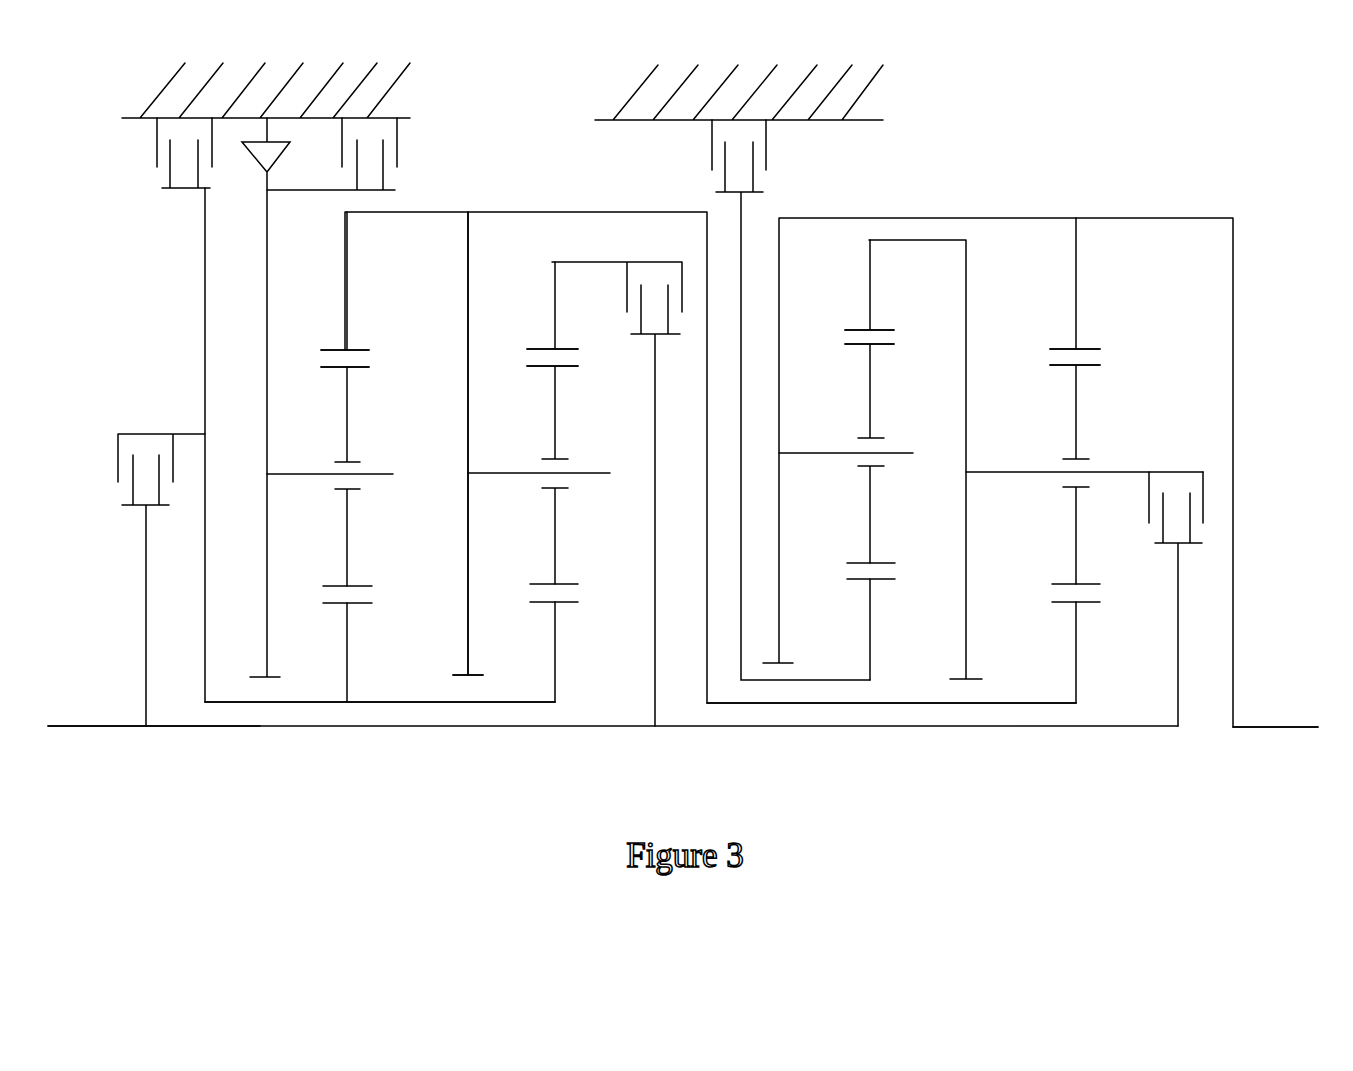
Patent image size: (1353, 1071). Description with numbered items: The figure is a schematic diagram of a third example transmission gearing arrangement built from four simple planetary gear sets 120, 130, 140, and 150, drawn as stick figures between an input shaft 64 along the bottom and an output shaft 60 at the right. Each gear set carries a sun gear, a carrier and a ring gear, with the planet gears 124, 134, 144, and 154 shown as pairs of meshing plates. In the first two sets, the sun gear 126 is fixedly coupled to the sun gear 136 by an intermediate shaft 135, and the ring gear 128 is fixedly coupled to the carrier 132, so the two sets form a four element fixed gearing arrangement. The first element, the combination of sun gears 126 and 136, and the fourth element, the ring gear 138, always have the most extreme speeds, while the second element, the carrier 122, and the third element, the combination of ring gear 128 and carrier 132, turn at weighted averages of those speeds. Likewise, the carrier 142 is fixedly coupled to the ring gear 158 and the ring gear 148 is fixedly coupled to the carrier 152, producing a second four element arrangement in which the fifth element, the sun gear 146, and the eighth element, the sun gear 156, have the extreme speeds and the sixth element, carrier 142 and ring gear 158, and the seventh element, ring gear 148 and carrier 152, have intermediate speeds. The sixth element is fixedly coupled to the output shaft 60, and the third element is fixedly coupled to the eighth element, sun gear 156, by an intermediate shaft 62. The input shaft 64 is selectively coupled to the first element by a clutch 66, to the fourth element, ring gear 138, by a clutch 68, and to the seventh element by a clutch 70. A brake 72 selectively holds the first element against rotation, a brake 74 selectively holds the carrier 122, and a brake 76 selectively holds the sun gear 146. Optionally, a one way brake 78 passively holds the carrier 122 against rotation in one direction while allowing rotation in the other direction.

The output shaft 60 is at (1290, 727).
The intermediate shaft 62 is at (918, 703).
The input shaft 64 is at (258, 727).
The clutch 66 is at (155, 434).
The clutch 68 is at (682, 262).
The clutch 70 is at (1190, 472).
The brake 72 is at (157, 140).
The brake 74 is at (397, 148).
The brake 76 is at (766, 145).
The one way brake 78 is at (257, 160).
The simple planetary gear set 120 is at (307, 485).
The carrier 122 is at (267, 488).
The planet gears 124 is at (348, 422).
The sun gear 126 is at (297, 595).
The ring gear 128 is at (345, 315).
The simple planetary gear set 130 is at (411, 499).
The carrier 132 is at (468, 485).
The planet gears 134 is at (557, 417).
The intermediate shaft 135 is at (413, 700).
The sun gear 136 is at (550, 638).
The ring gear 138 is at (555, 313).
The simple planetary gear set 140 is at (856, 512).
The carrier 142 is at (813, 453).
The planet gears 144 is at (872, 398).
The sun gear 146 is at (868, 617).
The ring gear 148 is at (868, 293).
The simple planetary gear set 150 is at (1084, 502).
The carrier 152 is at (1008, 472).
The planet gears 154 is at (1077, 422).
The sun gear 156 is at (1073, 638).
The ring gear 158 is at (1073, 315).